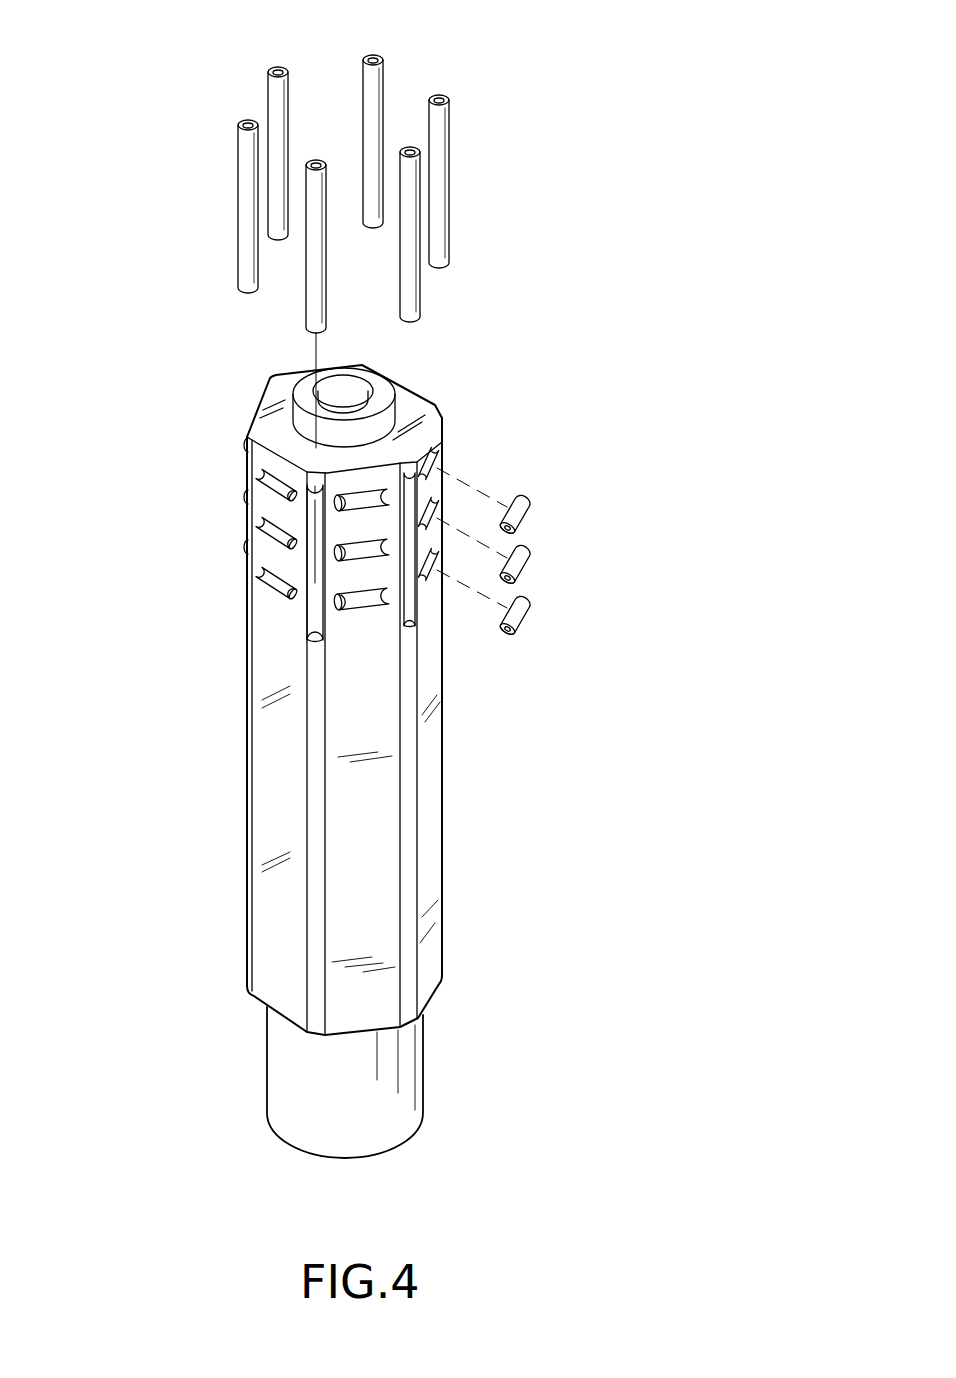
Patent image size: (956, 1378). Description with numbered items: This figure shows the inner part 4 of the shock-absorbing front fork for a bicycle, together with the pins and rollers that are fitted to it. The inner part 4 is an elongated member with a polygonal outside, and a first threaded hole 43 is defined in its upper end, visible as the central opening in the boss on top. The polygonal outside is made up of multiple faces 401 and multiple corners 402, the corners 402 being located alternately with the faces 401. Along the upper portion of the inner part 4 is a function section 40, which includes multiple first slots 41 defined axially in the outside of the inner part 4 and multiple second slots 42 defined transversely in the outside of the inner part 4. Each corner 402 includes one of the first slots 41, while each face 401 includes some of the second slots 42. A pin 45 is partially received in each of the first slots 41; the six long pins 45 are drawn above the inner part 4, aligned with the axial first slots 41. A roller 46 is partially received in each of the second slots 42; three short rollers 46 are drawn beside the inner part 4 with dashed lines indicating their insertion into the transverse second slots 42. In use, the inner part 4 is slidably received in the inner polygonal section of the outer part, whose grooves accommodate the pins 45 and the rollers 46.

The inner part 4 is at (442, 924).
The function section 40 is at (437, 448).
The first slots 41 is at (414, 628).
The second slots 42 is at (428, 568).
The first threaded hole 43 is at (343, 393).
The pin 45 is at (452, 210).
The roller 46 is at (530, 566).
The faces 401 is at (277, 898).
The corners 402 is at (253, 800).